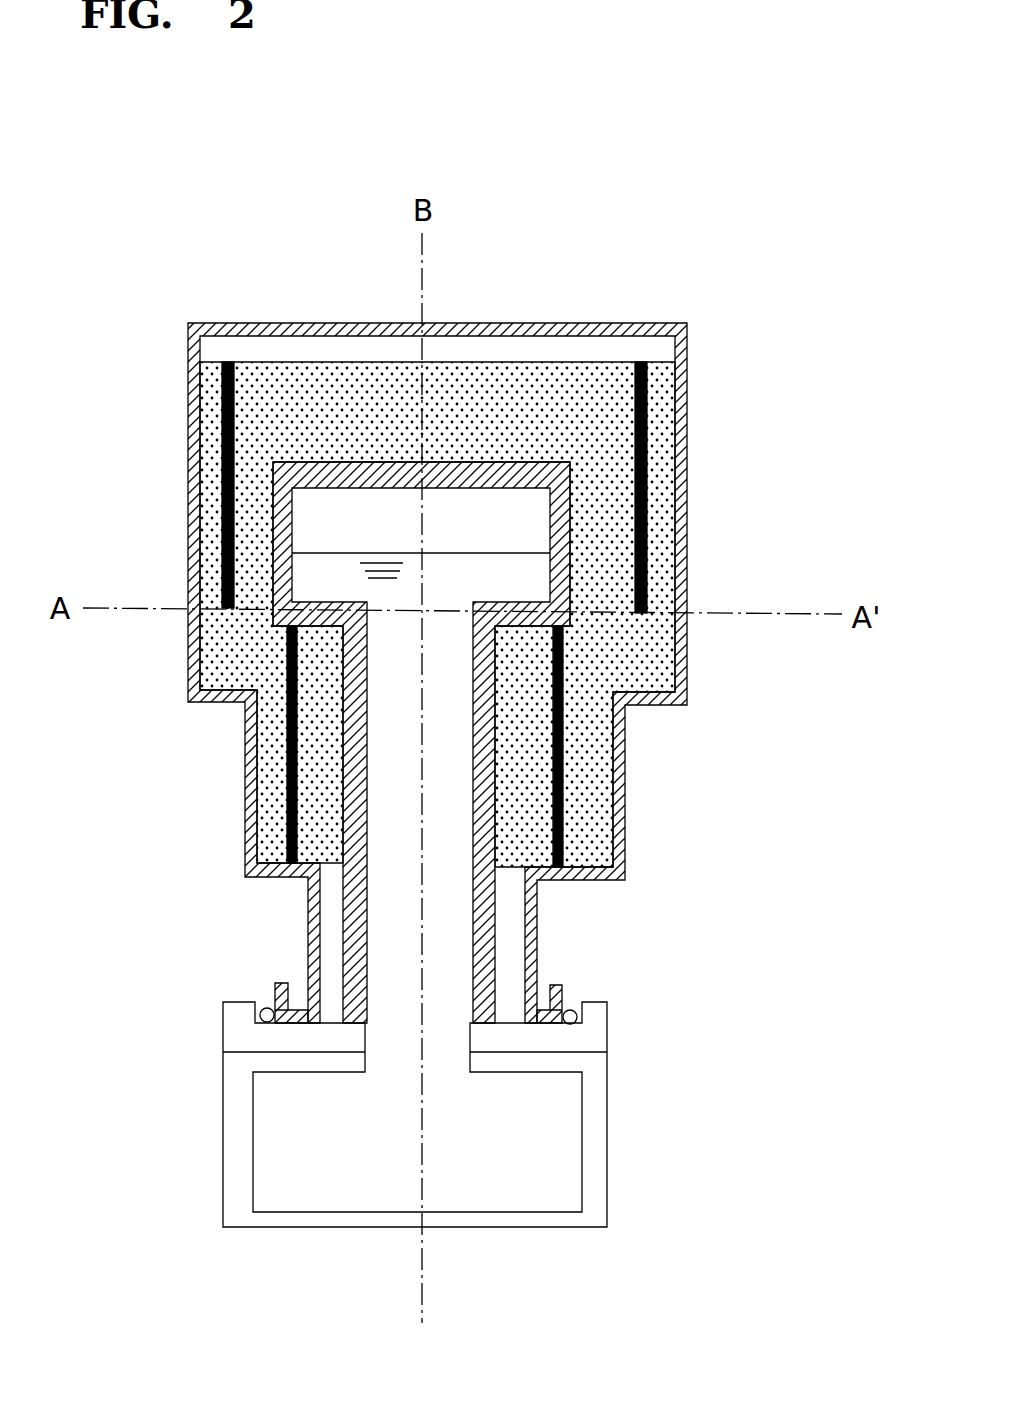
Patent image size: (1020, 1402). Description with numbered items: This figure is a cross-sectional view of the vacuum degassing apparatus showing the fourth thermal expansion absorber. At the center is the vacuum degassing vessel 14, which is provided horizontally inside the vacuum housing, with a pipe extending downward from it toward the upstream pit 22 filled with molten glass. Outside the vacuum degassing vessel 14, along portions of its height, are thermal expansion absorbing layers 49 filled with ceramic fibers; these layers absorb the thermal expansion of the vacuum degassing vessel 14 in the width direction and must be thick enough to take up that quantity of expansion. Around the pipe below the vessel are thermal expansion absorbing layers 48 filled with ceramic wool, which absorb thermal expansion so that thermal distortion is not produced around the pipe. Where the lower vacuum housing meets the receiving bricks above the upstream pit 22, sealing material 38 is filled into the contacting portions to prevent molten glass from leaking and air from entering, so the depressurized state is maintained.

The vacuum degassing vessel 14 is at (506, 462).
The upstream pit 22 is at (595, 1122).
The sealing material 38 is at (262, 1008).
The thermal expansion absorbing layer 48 is at (287, 753).
The thermal expansion absorbing layer 49 is at (222, 545).